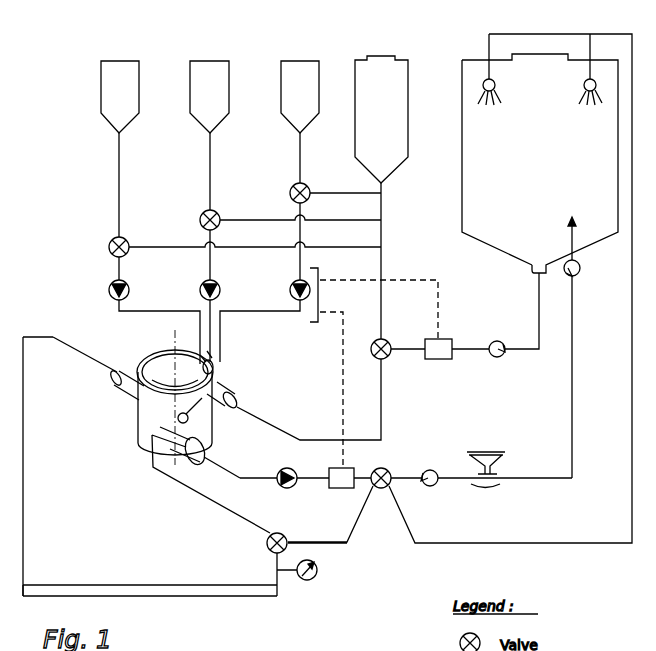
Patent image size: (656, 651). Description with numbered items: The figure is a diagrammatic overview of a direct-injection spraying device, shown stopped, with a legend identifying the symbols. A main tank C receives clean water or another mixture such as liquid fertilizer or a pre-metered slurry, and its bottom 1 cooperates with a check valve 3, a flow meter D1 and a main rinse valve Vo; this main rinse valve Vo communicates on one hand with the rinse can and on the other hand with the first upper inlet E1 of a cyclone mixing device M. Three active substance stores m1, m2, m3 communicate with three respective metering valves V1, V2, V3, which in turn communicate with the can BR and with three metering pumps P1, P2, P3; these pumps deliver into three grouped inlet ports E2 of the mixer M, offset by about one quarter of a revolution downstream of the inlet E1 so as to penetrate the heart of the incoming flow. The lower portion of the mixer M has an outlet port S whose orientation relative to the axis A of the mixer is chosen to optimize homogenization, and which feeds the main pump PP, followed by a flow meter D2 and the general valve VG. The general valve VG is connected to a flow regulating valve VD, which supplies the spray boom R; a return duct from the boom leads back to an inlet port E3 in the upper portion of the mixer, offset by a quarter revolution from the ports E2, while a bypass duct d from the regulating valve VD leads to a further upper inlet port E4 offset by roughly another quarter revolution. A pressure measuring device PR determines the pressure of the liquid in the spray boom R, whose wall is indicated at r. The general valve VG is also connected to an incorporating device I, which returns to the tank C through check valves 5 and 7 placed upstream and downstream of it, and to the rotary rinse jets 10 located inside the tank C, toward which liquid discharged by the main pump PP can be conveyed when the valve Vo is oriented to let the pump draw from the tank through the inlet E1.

The active substance store m1 is at (133, 102).
The active substance store m2 is at (223, 102).
The active substance store m3 is at (314, 102).
The can BR is at (394, 102).
The main tank C is at (548, 147).
The rotary rinse jets 10 is at (583, 84).
The bottom of the tank 1 is at (497, 251).
The check valve 7 is at (577, 276).
The metering valve V1 is at (109, 242).
The metering valve V2 is at (201, 215).
The metering valve V3 is at (292, 188).
The metering pump P1 is at (110, 285).
The metering pump P2 is at (201, 285).
The metering pump P3 is at (291, 285).
The cyclone mixing device M is at (130, 410).
The first upper inlet E1 is at (218, 380).
The grouped inlet ports E2 is at (216, 357).
The inlet port E3 is at (110, 377).
The upper inlet port E4 is at (140, 451).
The outlet port S is at (197, 463).
The bypass duct d is at (193, 497).
The main rinse valve Vo is at (385, 339).
The flow meter D1 is at (452, 339).
The check valve 3 is at (503, 356).
The main pump PP is at (284, 468).
The flow meter D2 is at (348, 488).
The general valve VG is at (388, 468).
The check valve 5 is at (432, 486).
The incorporating device I is at (496, 445).
The flow regulating valve VD is at (277, 532).
The pressure measuring device PR is at (315, 578).
The spray boom R is at (81, 578).
The recovery tank wall r is at (23, 500).
The axis of the mixer A is at (242, 648).